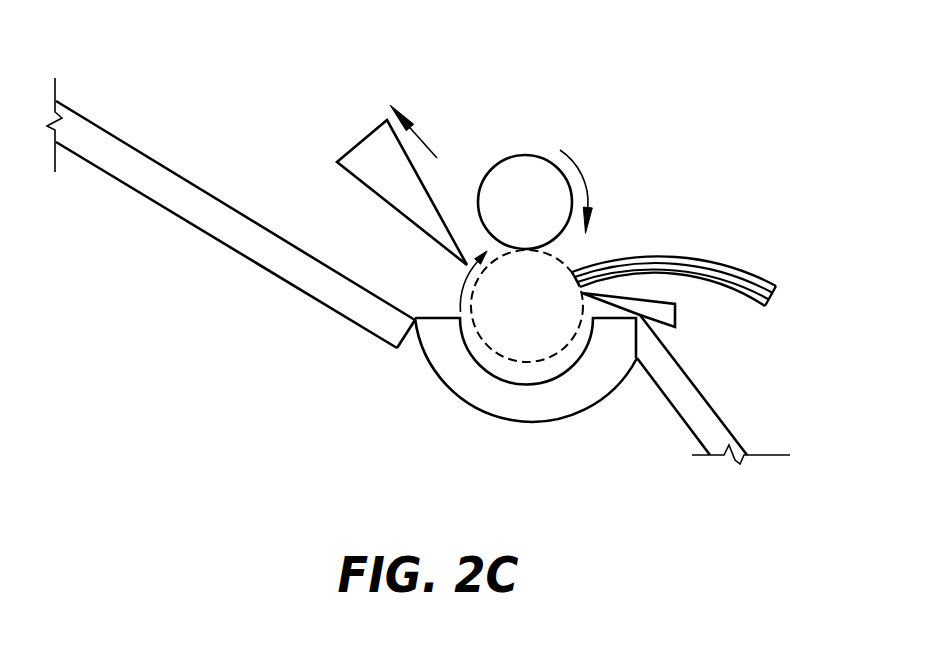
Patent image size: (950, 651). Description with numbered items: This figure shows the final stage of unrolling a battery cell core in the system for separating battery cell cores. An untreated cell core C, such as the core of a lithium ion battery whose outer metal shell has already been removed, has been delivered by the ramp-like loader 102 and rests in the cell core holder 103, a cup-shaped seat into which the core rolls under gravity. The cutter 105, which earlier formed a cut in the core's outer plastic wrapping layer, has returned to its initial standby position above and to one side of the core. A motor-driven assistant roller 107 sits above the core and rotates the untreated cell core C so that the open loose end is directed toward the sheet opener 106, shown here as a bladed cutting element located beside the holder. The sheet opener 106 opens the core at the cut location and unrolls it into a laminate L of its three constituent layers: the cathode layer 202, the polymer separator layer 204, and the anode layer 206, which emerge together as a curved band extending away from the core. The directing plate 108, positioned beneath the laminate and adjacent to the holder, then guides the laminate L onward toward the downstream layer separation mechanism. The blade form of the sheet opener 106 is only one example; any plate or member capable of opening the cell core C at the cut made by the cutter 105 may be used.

The loader 102 is at (140, 194).
The cell core holder 103 is at (437, 375).
The cutter 105 is at (386, 120).
The sheet opener 106 is at (612, 304).
The assistant roller 107 is at (539, 154).
The directing plate 108 is at (714, 410).
The laminate L is at (742, 245).
The cathode layer 202 is at (768, 307).
The polymer separator layer 204 is at (738, 278).
The anode layer 206 is at (710, 263).
The untreated cell core C is at (512, 361).